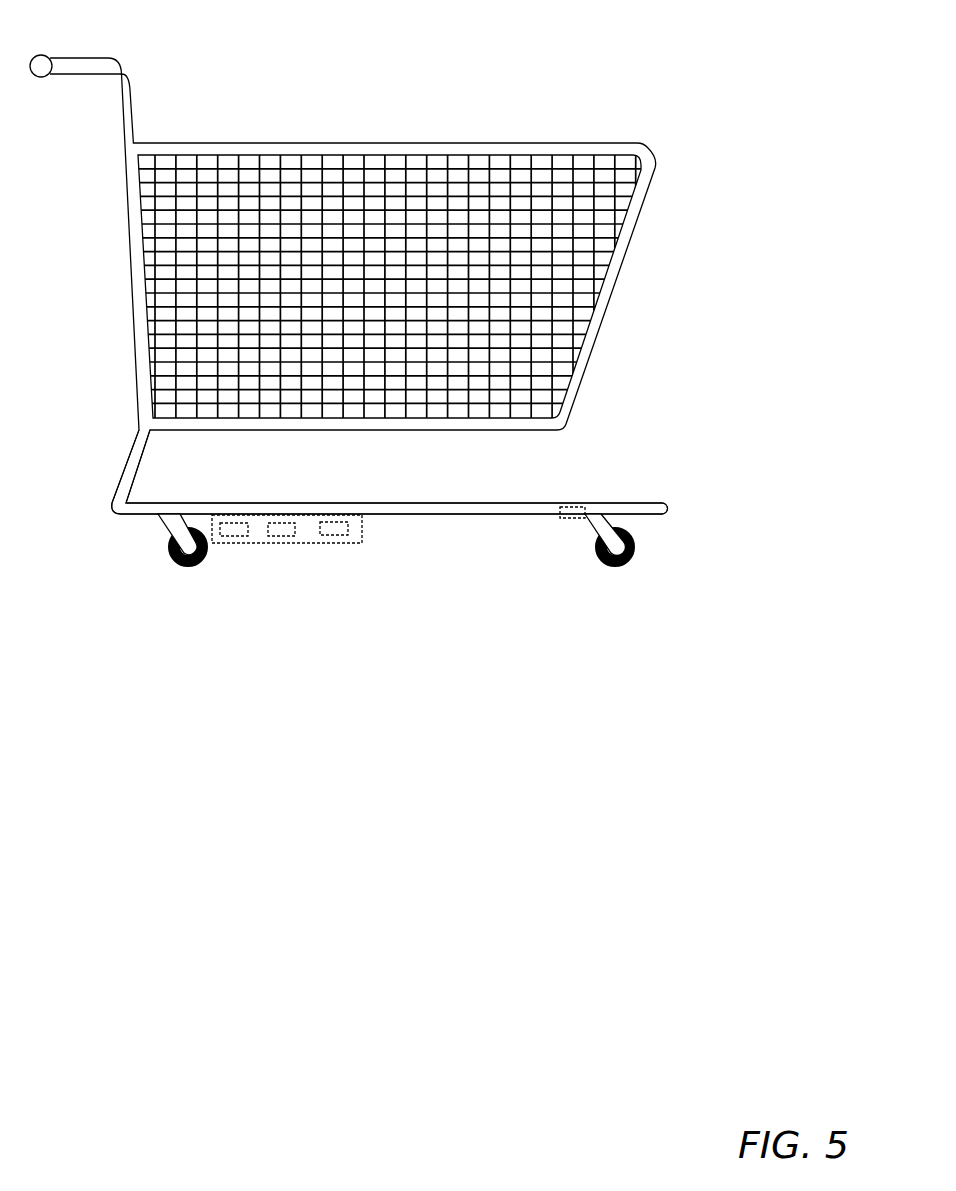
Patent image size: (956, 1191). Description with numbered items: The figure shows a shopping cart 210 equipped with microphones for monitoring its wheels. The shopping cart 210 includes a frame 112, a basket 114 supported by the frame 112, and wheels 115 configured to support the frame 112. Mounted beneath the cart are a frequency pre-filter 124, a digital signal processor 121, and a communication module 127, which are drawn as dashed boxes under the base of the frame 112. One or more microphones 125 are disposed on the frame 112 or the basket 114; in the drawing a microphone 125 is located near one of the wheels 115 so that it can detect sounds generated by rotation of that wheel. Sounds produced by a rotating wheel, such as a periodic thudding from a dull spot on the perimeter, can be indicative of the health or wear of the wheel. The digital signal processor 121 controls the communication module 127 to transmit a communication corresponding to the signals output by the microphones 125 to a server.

The shopping cart 210 is at (360, 115).
The frame 112 is at (124, 458).
The basket 114 is at (498, 165).
The wheels 115 is at (187, 565).
The digital signal processor 121 is at (287, 537).
The frequency pre-filter 124 is at (235, 537).
The communication module 127 is at (347, 535).
The microphones 125 is at (572, 520).